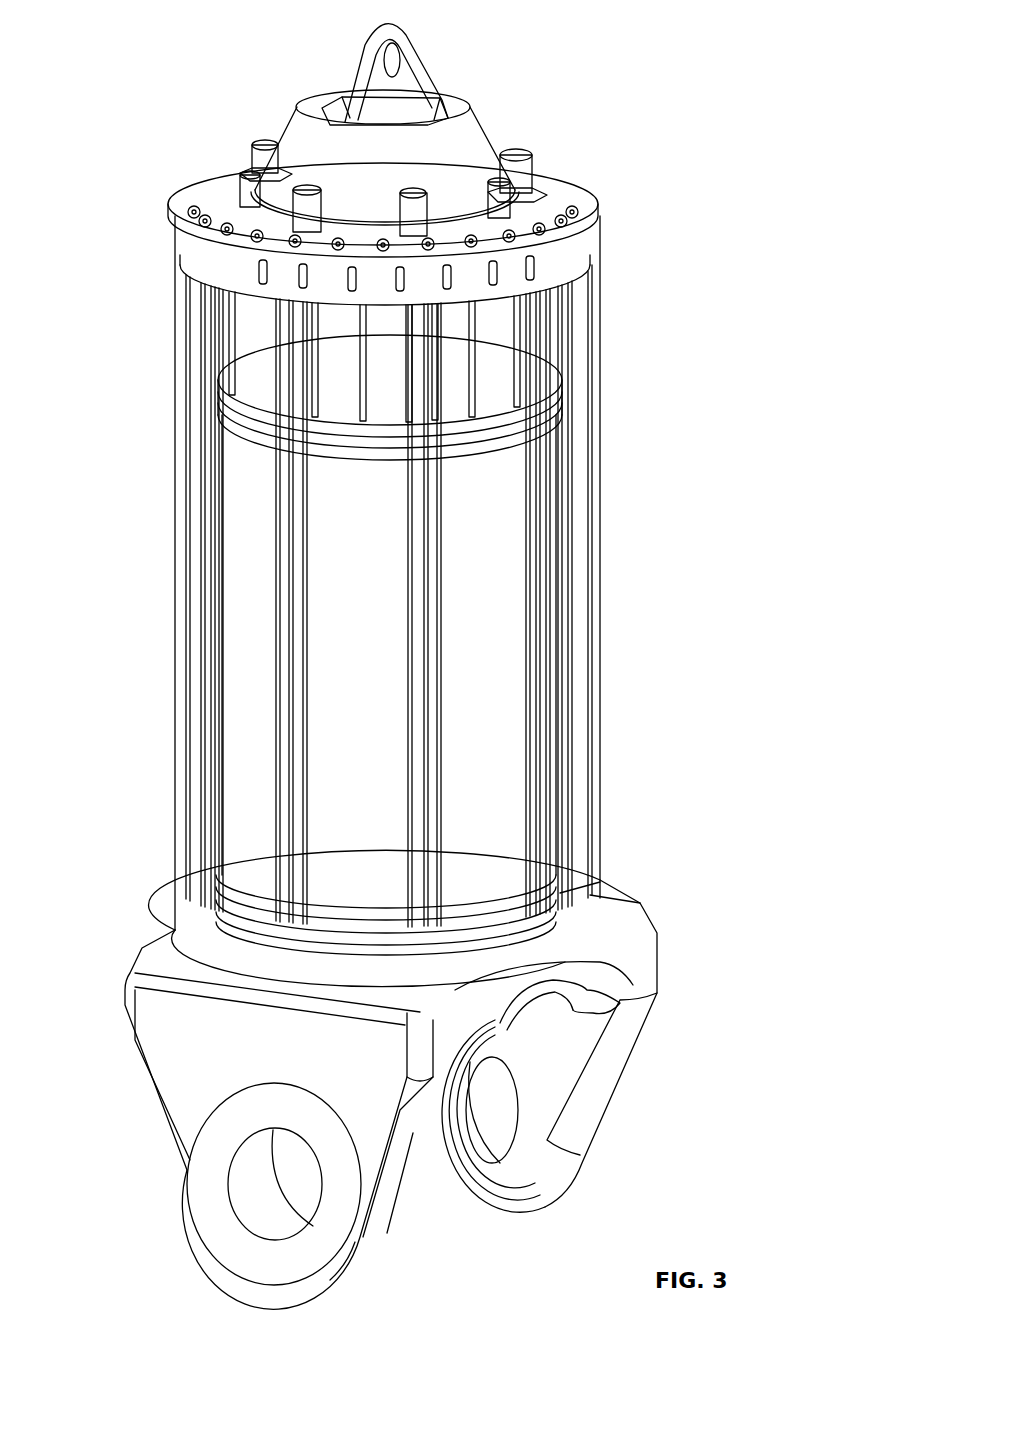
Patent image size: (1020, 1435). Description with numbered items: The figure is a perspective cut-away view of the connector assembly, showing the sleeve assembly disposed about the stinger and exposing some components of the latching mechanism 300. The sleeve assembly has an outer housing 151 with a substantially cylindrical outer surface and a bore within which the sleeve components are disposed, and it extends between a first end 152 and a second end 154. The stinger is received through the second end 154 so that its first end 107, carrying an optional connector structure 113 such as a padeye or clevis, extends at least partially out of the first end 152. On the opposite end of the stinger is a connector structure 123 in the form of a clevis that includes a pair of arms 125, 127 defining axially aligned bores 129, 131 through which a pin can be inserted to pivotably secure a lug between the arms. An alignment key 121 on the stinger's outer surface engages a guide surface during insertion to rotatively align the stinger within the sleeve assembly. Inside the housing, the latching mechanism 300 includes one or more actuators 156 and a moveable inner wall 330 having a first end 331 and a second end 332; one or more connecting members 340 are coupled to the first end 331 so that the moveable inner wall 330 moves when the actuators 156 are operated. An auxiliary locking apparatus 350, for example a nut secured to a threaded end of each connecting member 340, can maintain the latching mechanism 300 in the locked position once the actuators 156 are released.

The first end of the stinger 107 is at (452, 103).
The connector structure 113 is at (392, 27).
The alignment key 121 is at (503, 342).
The connector structure 123 is at (154, 939).
The arm 125 is at (185, 1031).
The arm 127 is at (636, 1013).
The bore 129 is at (294, 1165).
The bore 131 is at (493, 1090).
The outer housing 151 is at (177, 598).
The first end of the sleeve assembly 152 is at (175, 197).
The second end of the sleeve assembly 154 is at (633, 964).
The actuator 156 is at (255, 137).
The latching mechanism 300 is at (640, 349).
The moveable inner wall 330 is at (247, 738).
The first end of the moveable inner wall 331 is at (247, 422).
The second end of the moveable inner wall 332 is at (530, 908).
The connecting member 340 is at (363, 398).
The auxiliary locking apparatus 350 is at (367, 222).